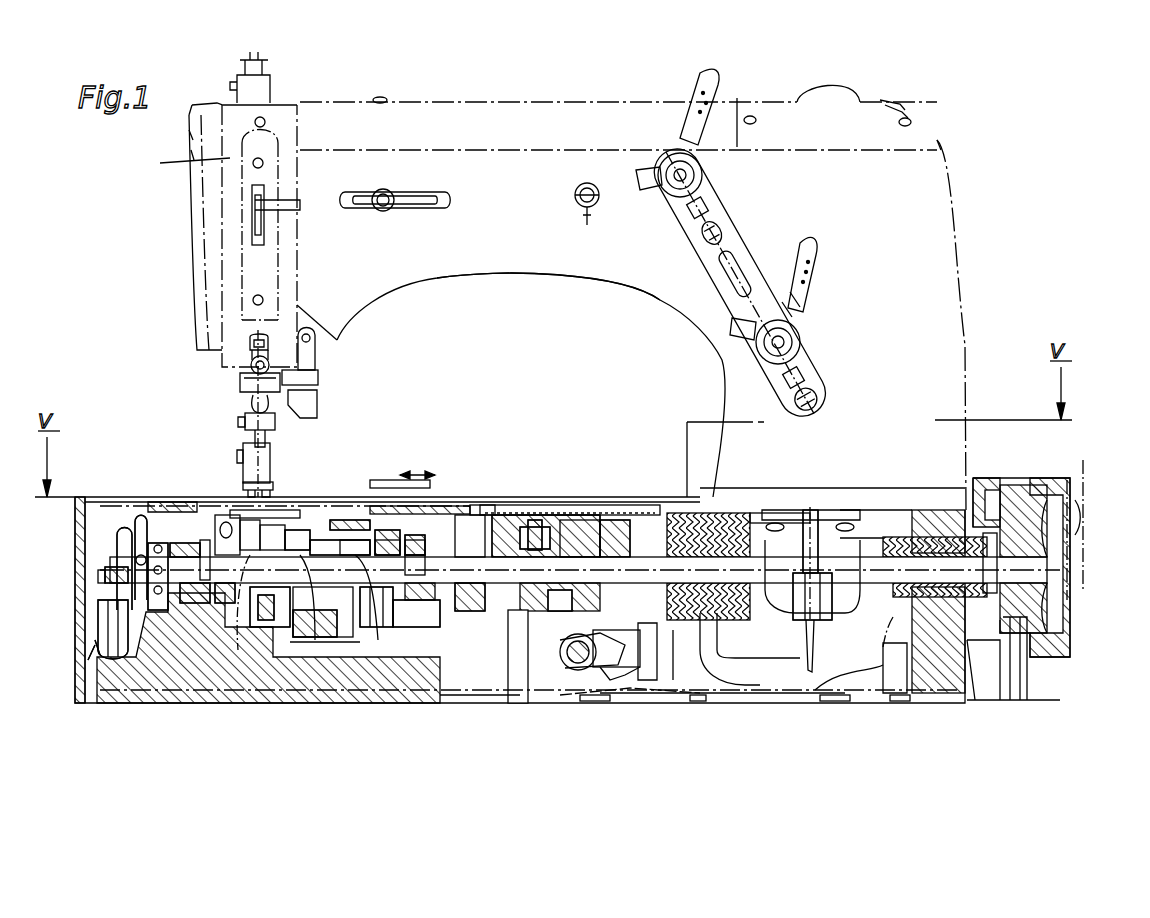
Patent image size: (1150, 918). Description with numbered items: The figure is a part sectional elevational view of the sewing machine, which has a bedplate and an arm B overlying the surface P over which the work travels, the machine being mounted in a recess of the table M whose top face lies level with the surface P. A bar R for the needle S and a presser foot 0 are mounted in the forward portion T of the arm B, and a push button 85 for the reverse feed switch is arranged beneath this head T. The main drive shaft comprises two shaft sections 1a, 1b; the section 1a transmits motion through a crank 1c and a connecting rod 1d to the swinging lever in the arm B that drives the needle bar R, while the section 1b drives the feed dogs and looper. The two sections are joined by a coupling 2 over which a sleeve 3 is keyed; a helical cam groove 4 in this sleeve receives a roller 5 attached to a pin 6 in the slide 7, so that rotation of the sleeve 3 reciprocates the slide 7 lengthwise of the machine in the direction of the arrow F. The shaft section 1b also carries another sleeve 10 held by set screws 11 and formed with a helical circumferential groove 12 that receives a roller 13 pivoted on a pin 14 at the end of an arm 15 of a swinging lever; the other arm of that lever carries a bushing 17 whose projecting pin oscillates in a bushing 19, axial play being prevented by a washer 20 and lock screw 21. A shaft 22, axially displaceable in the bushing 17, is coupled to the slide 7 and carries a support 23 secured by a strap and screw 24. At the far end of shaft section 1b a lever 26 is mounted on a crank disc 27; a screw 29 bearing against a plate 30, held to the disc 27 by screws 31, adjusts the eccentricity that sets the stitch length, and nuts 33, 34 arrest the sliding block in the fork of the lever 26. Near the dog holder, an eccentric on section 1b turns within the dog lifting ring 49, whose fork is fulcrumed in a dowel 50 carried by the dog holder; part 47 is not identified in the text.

The forward portion of the arm T is at (175, 163).
The arm B is at (548, 268).
The needle bar R is at (245, 400).
The push button 85 is at (318, 400).
The needle S is at (275, 433).
The work surface P is at (385, 480).
The arrow indicating slide direction F is at (415, 475).
The table M is at (1082, 487).
The presser foot 0 is at (247, 482).
The plate 30 is at (153, 557).
The screws 31 is at (158, 545).
The screw 29 is at (177, 545).
The support 23 is at (300, 507).
The screw 24 is at (335, 510).
The shaft 22 is at (355, 510).
The bushing 17 is at (370, 510).
The pin 14 is at (440, 497).
The arm of swinging lever 15 is at (415, 568).
The slide 7 is at (466, 515).
The shaft section 1b is at (472, 512).
The coupling 2 is at (500, 567).
The roller 5 is at (535, 537).
The pin 6 is at (553, 540).
The sleeve 3 is at (577, 543).
The shaft section 1a is at (593, 567).
The connecting rod 1d is at (813, 543).
The crank 1c is at (842, 597).
The helical cam groove 4 is at (573, 603).
The nut 34 is at (120, 543).
The nut 33 is at (115, 572).
The bushing 19 is at (363, 553).
The lock screw 21 is at (373, 552).
The roller 13 is at (407, 547).
The sleeve 10 is at (447, 557).
The dog lifting ring 49 is at (185, 605).
The crank disc 27 is at (130, 640).
The pin 47 is at (222, 623).
The dowel 50 is at (267, 613).
The washer 20 is at (350, 643).
The set screws 11 is at (407, 612).
The helical circumferential groove 12 is at (447, 633).
The lever 26 is at (103, 663).